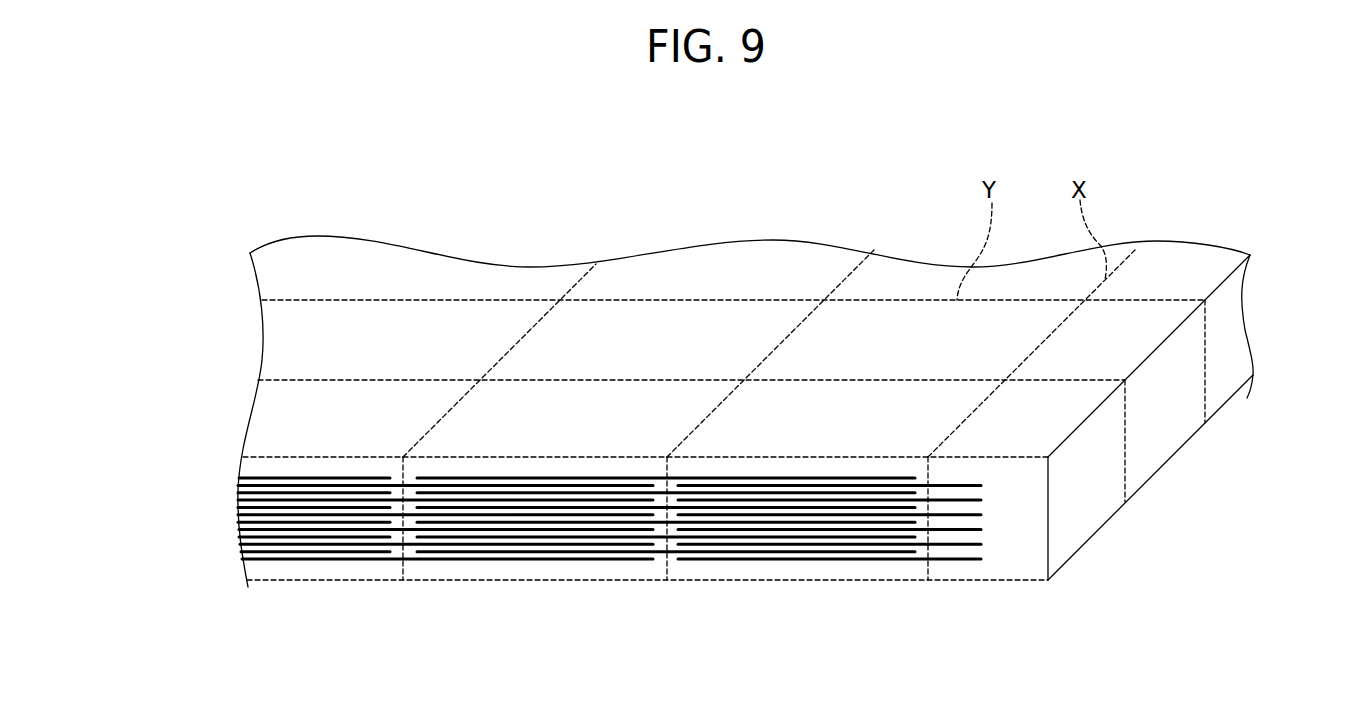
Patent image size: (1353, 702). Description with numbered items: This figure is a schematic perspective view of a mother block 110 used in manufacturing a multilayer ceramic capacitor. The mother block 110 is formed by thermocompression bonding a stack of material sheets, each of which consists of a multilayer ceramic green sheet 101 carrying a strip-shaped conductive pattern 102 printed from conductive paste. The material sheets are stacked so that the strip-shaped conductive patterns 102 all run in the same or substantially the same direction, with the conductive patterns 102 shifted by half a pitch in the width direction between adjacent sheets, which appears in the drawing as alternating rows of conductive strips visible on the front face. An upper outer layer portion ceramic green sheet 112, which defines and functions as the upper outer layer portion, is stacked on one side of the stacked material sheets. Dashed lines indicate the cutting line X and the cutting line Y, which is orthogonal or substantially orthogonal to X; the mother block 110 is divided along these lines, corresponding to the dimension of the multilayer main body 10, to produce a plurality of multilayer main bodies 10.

The mother block 110 is at (824, 170).
The multilayer main body 10 is at (658, 320).
The multilayer ceramic green sheet 101 is at (898, 548).
The conductive pattern 102 is at (838, 477).
The upper outer layer portion ceramic green sheet 112 is at (277, 466).